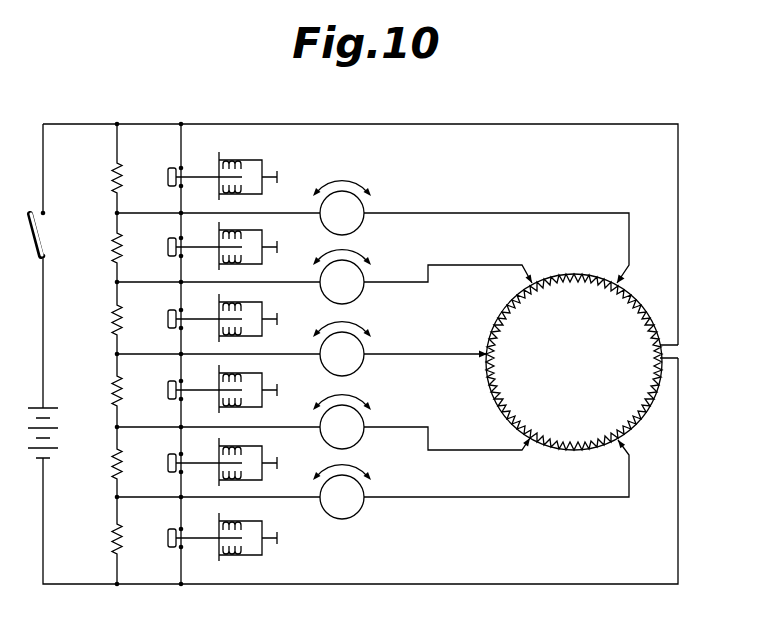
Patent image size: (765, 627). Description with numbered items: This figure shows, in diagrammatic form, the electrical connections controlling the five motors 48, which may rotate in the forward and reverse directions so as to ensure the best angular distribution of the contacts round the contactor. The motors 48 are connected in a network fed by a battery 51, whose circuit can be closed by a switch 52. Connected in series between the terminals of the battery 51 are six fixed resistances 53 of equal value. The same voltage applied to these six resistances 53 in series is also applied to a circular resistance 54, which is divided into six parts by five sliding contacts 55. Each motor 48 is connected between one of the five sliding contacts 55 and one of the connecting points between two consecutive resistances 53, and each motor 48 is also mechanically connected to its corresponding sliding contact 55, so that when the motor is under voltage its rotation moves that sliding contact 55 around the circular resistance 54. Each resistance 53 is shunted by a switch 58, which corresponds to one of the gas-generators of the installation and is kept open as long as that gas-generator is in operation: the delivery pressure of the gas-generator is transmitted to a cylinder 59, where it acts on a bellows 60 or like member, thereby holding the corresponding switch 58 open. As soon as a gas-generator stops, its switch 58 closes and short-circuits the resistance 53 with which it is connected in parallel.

The motor 48 is at (355, 203).
The battery 51 is at (52, 442).
The switch 52 is at (44, 246).
The fixed resistance 53 is at (113, 178).
The circular resistance 54 is at (633, 303).
The sliding contact 55 is at (527, 282).
The switch 58 is at (172, 166).
The cylinder 59 is at (259, 358).
The bellows 60 is at (236, 190).